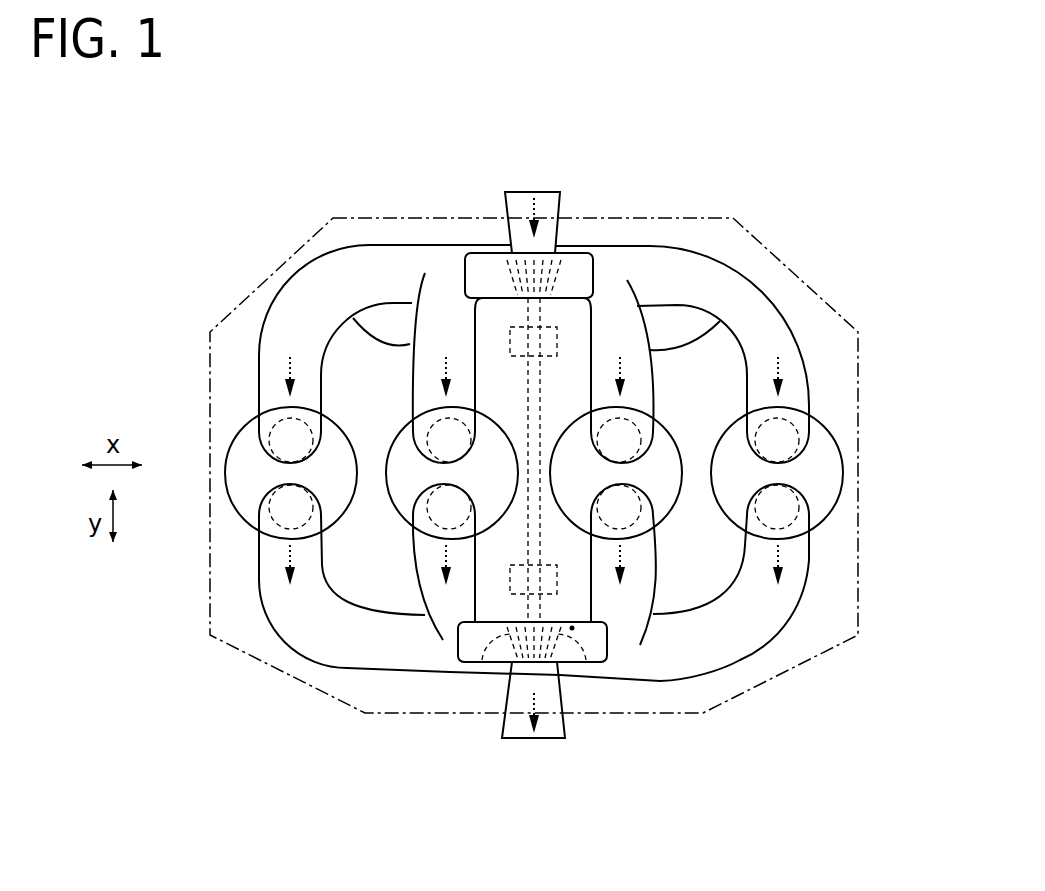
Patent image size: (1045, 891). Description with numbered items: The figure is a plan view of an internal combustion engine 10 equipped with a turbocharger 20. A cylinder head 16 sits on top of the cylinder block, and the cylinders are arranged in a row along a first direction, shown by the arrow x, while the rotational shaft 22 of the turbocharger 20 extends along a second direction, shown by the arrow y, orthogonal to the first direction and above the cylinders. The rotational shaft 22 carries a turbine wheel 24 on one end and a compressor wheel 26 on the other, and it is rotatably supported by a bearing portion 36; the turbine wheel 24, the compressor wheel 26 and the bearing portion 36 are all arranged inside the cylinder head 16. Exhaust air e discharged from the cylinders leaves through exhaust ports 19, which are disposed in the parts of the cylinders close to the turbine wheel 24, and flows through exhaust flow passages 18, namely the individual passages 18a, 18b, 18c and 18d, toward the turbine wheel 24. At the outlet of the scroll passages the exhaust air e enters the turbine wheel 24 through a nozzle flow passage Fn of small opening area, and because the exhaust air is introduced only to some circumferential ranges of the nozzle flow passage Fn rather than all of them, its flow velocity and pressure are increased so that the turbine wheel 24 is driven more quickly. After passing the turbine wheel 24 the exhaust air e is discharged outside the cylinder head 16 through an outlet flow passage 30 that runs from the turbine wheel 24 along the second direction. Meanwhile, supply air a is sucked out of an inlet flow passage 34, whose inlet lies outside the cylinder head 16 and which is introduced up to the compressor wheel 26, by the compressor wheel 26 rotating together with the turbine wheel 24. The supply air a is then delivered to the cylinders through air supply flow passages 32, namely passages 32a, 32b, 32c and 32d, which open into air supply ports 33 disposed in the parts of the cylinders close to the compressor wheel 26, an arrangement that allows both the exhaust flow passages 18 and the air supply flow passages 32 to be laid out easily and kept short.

The internal combustion engine 10 is at (534, 269).
The cylinder head 16 is at (563, 465).
The exhaust flow passages 18 is at (532, 608).
The exhaust flow passage 18a is at (267, 608).
The exhaust flow passage 18b is at (292, 584).
The exhaust flow passage 18c is at (772, 608).
The exhaust flow passage 18d is at (804, 584).
The exhaust port 19 is at (543, 511).
The turbocharger 20 is at (468, 714).
The rotational shaft 22 is at (713, 452).
The turbine wheel 24 is at (534, 664).
The compressor wheel 26 is at (479, 229).
The outlet flow passage 30 is at (542, 695).
The air supply flow passages 32 is at (535, 326).
The air supply flow passage 32a is at (293, 351).
The air supply flow passage 32b is at (328, 326).
The air supply flow passage 32c is at (738, 326).
The air supply flow passage 32d is at (766, 351).
The air supply port 33 is at (543, 460).
The inlet flow passage 34 is at (496, 206).
The bearing portion 36 is at (584, 445).
The supply air a is at (566, 199).
The exhaust air e is at (494, 730).
The nozzle flow passage Fn is at (652, 697).